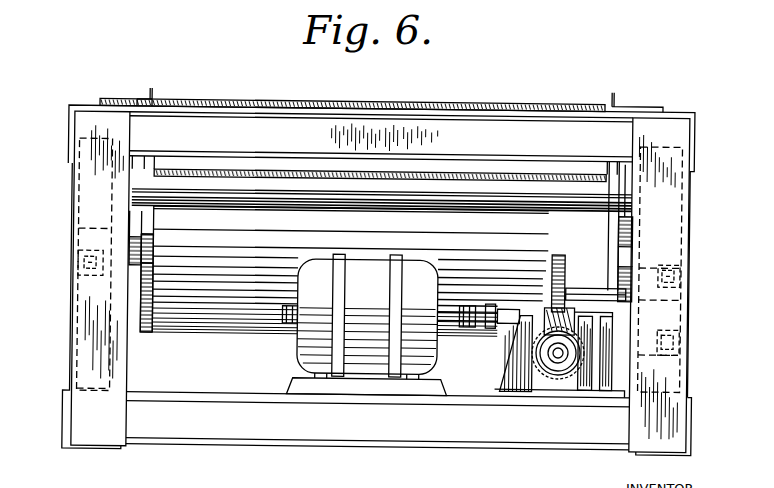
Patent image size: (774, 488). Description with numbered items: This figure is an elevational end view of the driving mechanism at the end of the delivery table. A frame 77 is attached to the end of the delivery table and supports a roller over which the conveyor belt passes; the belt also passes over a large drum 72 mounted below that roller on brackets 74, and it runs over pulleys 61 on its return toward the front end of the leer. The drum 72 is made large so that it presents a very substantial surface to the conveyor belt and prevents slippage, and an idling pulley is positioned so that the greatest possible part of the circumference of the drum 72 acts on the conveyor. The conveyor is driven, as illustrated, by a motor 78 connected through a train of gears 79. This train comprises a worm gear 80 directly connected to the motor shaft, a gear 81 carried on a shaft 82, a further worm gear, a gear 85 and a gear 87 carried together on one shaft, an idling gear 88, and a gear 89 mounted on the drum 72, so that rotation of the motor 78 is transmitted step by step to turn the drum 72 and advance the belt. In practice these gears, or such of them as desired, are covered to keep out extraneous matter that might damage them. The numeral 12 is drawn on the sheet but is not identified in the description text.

The roller 12 is at (250, 291).
The pulleys 61 is at (173, 182).
The drum 72 is at (150, 216).
The brackets 74 is at (96, 268).
The frame 77 is at (95, 199).
The motor 78 is at (370, 348).
The train of gears 79 is at (552, 357).
The worm gear 80 is at (519, 320).
The gear 81 is at (575, 367).
The shaft 82 is at (564, 349).
The gear 85 is at (568, 256).
The gear 87 is at (630, 292).
The idling gear 88 is at (629, 248).
The gear 89 is at (623, 230).